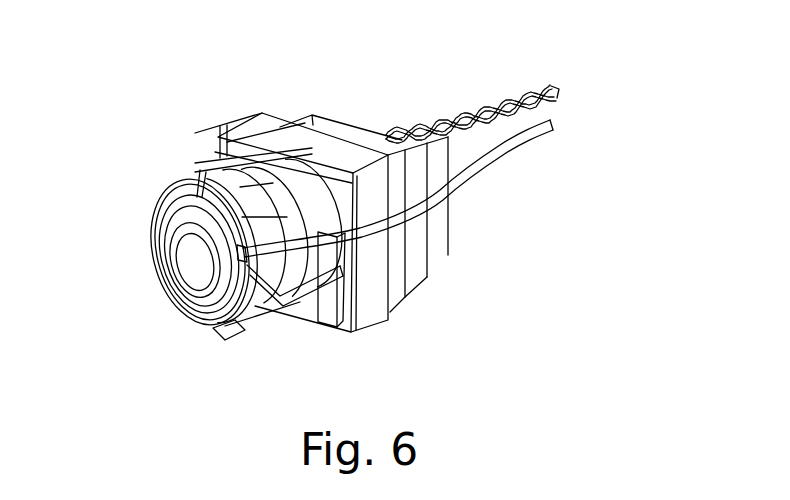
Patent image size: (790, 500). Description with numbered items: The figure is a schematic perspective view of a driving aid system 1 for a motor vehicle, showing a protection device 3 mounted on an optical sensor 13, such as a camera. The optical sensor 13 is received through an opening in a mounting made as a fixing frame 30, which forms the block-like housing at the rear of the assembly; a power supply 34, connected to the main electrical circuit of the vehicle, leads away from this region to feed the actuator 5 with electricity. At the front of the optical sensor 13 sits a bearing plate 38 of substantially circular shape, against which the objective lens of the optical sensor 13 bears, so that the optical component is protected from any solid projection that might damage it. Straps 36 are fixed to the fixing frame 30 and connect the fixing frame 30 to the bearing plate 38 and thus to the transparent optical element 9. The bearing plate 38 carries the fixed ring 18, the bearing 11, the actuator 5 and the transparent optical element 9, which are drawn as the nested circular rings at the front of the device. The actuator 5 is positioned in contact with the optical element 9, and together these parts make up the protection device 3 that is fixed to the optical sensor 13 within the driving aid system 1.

The driving aid system 1 is at (531, 50).
The protection device 3 is at (223, 130).
The actuator 5 is at (162, 205).
The transparent optical element 9 is at (193, 263).
The bearing 11 is at (182, 133).
The optical sensor 13 is at (441, 132).
The fixed ring 18 is at (213, 338).
The fixing frame 30 is at (385, 318).
The power supply 34 is at (455, 195).
The straps 36 is at (310, 277).
The bearing plate 38 is at (233, 337).